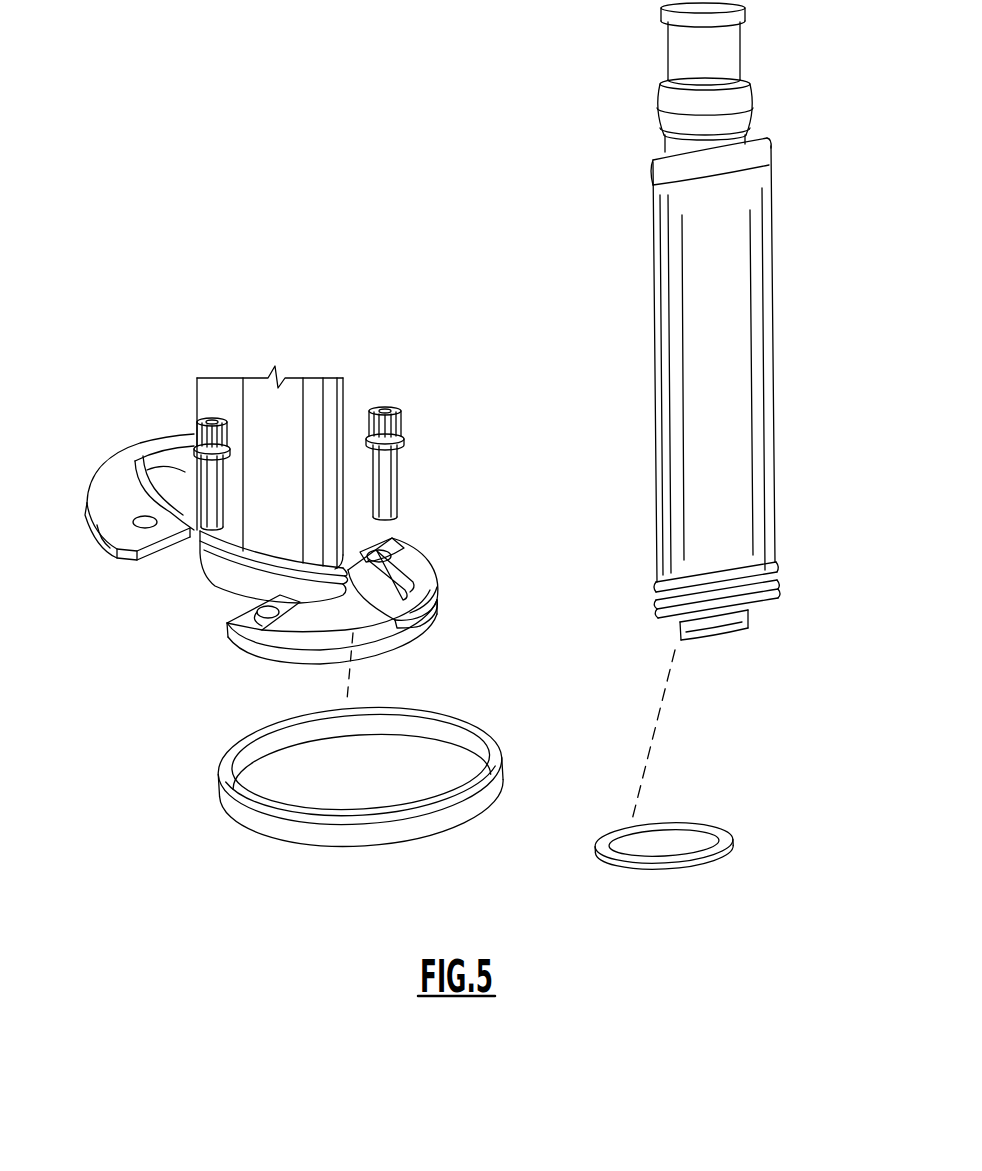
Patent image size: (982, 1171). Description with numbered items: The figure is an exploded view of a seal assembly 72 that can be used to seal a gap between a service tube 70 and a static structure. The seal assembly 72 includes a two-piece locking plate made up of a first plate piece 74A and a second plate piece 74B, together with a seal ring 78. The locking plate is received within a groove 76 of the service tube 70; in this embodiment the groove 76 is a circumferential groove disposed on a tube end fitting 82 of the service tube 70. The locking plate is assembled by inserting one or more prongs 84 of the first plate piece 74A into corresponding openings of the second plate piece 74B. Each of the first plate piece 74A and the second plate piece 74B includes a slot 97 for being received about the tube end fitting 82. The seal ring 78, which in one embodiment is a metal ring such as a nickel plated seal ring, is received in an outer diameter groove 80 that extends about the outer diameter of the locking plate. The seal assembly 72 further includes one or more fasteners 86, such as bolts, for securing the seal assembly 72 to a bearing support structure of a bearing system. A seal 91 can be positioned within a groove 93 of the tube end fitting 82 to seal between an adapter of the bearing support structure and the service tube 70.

The service tube 70 is at (752, 372).
The seal assembly 72 is at (440, 420).
The first plate piece 74A is at (425, 577).
The second plate piece 74B is at (105, 478).
The groove 76 is at (780, 588).
The seal ring 78 is at (348, 833).
The outer diameter groove 80 is at (284, 650).
The tube end fitting 82 is at (776, 600).
The prongs 84 is at (235, 615).
The fasteners 86 is at (207, 487).
The seal 91 is at (665, 862).
The groove 93 is at (722, 640).
The slot 97 is at (155, 468).